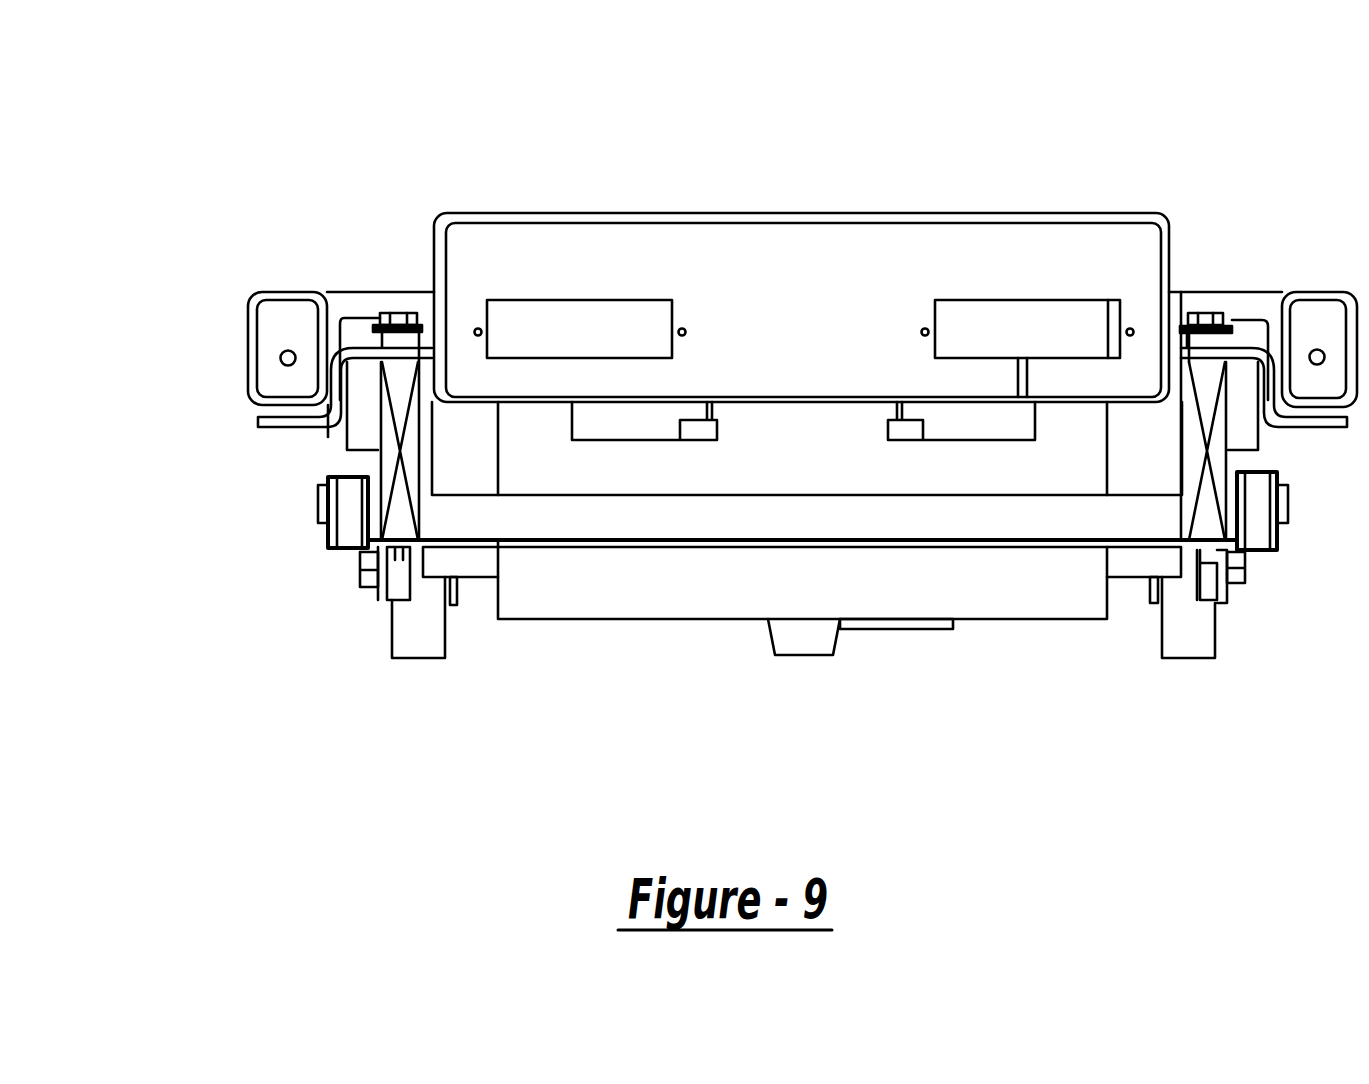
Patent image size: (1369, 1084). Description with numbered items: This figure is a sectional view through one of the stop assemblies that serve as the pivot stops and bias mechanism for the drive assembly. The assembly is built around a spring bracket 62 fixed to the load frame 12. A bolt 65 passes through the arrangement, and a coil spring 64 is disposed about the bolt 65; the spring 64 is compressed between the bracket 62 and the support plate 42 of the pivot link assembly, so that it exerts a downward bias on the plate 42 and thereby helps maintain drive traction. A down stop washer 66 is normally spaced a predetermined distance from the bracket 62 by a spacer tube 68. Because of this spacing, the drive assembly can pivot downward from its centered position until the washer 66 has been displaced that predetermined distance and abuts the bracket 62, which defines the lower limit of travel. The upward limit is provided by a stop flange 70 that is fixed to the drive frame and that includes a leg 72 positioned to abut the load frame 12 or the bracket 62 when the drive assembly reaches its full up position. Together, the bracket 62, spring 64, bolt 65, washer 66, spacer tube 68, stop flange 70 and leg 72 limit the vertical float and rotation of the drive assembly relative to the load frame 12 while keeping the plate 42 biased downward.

The load frame 12 is at (340, 291).
The support plate 42 is at (574, 542).
The spring bracket 62 is at (372, 336).
The coil spring 64 is at (387, 467).
The bolt 65 is at (401, 300).
The down stop washer 66 is at (418, 312).
The spacer tube 68 is at (352, 362).
The stop flange 70 is at (353, 438).
The leg 72 is at (362, 462).